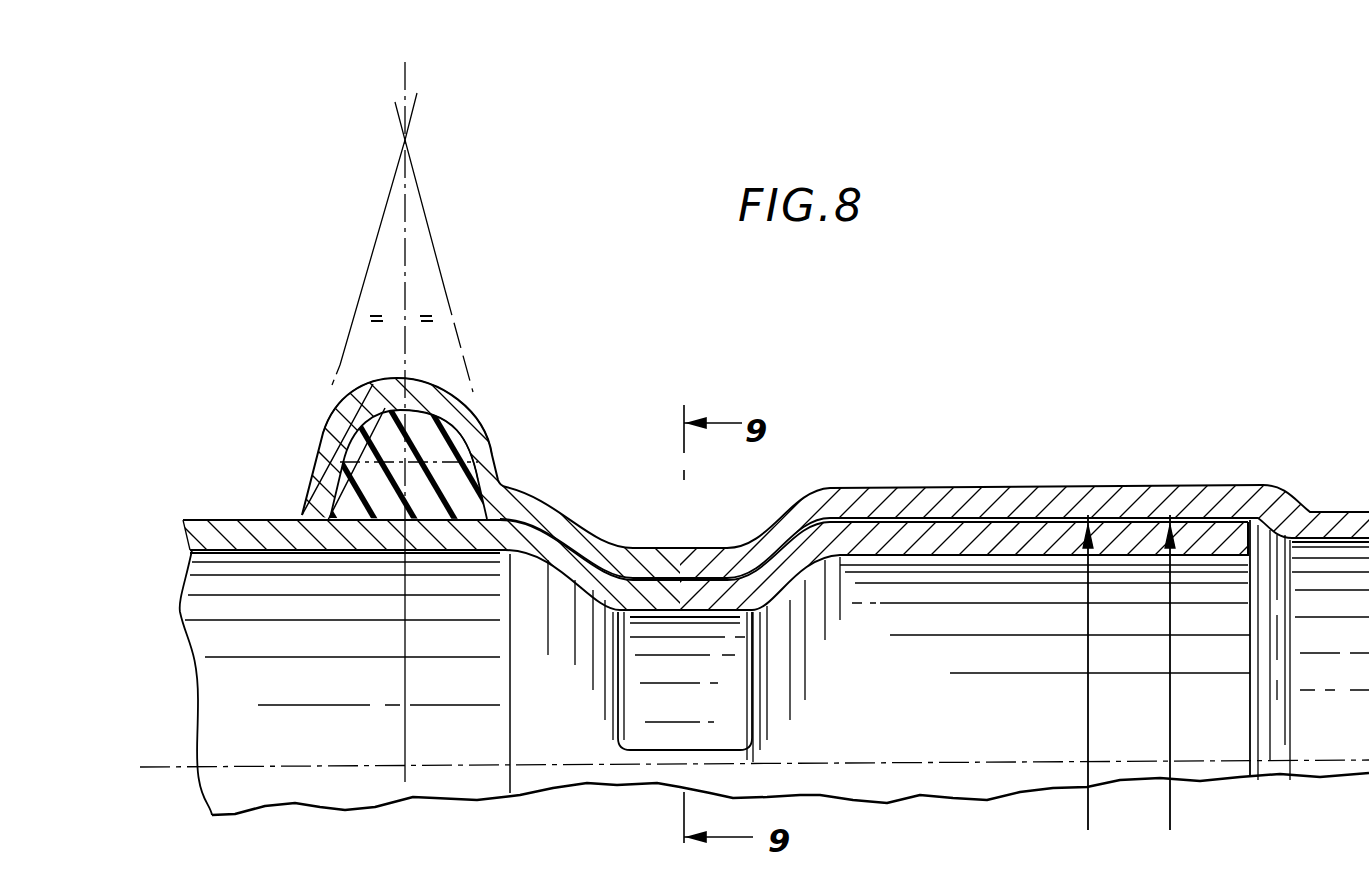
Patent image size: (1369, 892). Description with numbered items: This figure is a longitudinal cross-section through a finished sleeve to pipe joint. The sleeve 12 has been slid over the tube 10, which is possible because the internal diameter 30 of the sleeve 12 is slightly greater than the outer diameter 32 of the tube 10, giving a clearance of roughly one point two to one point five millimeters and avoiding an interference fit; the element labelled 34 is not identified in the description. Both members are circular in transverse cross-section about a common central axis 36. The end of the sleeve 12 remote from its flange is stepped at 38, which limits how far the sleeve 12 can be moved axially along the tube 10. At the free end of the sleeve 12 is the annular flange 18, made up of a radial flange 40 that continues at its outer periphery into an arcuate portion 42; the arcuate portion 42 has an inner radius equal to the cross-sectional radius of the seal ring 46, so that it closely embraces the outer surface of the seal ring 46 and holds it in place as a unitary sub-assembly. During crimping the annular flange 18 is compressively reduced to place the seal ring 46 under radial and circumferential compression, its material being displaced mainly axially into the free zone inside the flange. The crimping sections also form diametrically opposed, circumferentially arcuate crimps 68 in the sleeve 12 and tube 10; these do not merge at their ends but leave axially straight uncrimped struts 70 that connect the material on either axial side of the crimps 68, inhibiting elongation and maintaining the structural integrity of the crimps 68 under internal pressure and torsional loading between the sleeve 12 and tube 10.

The tube 10 is at (984, 546).
The sleeve 12 is at (923, 495).
The annular flange 18 is at (340, 407).
The internal diameter 30 is at (1086, 716).
The outer diameter 32 is at (1173, 720).
The lower layer 34 is at (1042, 527).
The central axis 36 is at (844, 766).
The step 38 is at (1337, 503).
The radial flange 40 is at (318, 485).
The arcuate portion 42 is at (367, 402).
The seal ring 46 is at (430, 438).
The crimps 68 is at (747, 692).
The struts 70 is at (652, 755).